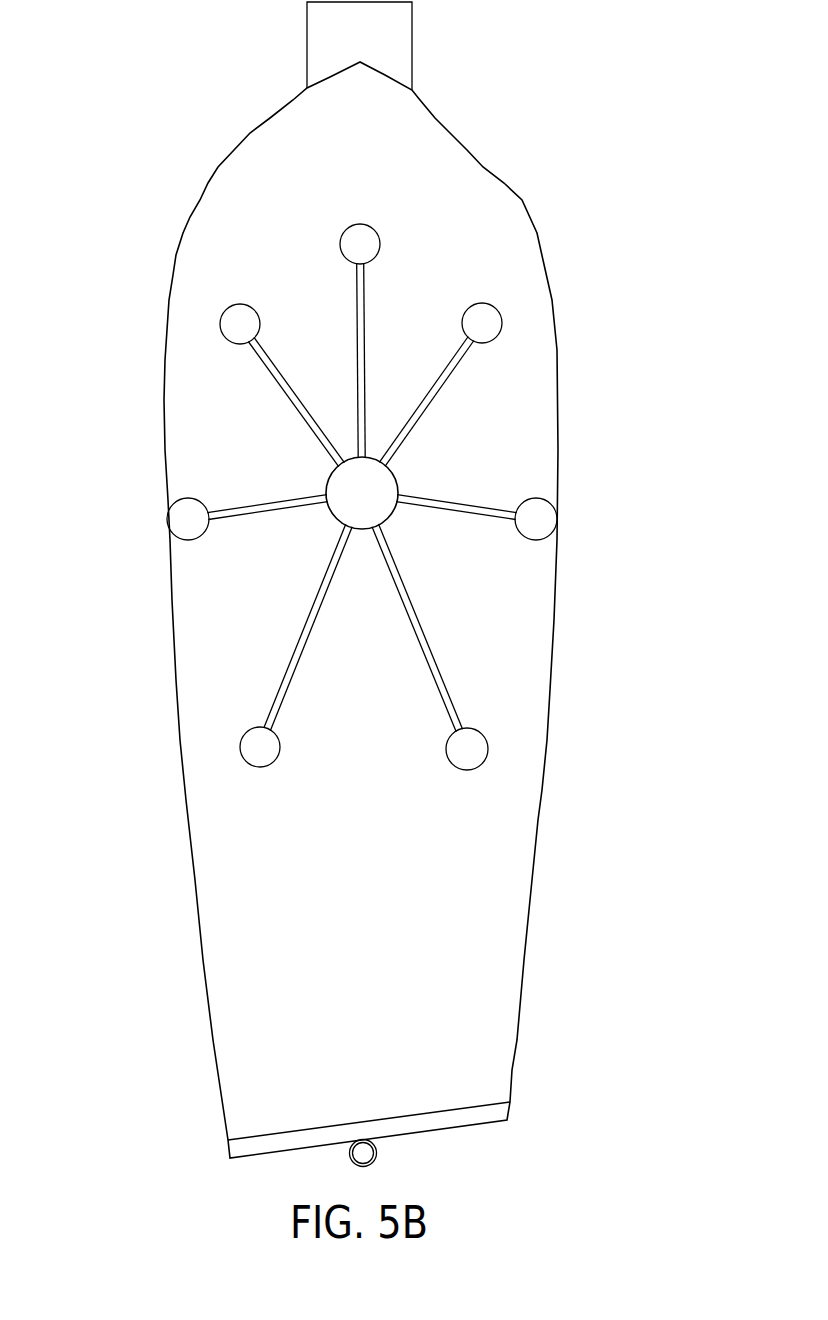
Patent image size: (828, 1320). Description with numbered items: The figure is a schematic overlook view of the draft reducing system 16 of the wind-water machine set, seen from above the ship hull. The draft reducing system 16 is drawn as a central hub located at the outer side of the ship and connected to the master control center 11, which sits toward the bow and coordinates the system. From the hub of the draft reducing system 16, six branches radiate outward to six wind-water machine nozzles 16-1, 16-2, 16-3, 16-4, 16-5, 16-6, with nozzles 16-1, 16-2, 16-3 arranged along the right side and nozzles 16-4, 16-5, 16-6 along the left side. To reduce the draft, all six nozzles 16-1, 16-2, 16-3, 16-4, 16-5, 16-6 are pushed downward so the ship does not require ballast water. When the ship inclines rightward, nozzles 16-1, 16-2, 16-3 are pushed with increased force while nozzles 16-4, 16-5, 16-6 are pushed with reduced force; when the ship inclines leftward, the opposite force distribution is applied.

The master control center 11 is at (363, 236).
The draft reducing system 16 is at (398, 477).
The wind-water machine nozzle 16-1 is at (480, 323).
The wind-water machine nozzle 16-2 is at (542, 520).
The wind-water machine nozzle 16-3 is at (470, 747).
The wind-water machine nozzle 16-4 is at (241, 318).
The wind-water machine nozzle 16-5 is at (193, 519).
The wind-water machine nozzle 16-6 is at (253, 743).